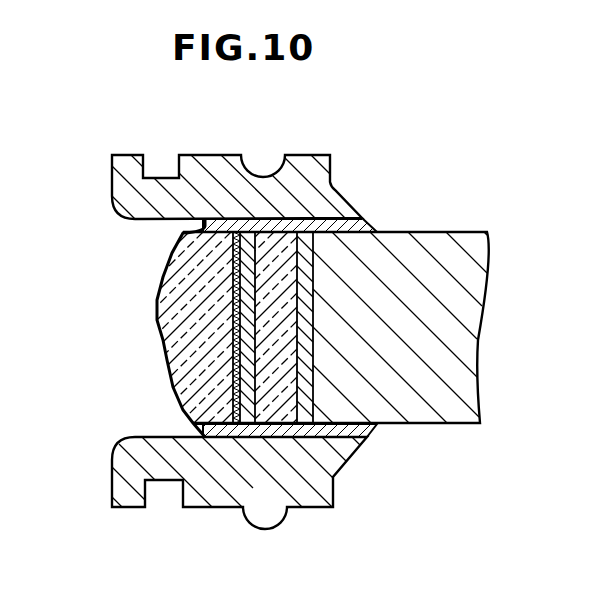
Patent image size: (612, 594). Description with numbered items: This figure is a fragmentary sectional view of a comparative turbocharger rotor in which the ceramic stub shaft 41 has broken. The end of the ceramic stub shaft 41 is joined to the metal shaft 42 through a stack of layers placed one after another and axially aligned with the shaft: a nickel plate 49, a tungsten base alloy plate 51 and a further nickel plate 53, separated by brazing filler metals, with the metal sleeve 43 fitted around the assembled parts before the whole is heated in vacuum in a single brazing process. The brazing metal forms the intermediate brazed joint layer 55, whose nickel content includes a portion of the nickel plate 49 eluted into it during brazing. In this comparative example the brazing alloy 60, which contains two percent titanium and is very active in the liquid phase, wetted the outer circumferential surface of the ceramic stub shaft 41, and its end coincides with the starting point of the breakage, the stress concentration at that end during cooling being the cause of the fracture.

The ceramic stub shaft 41 is at (163, 358).
The metal shaft 42 is at (450, 232).
The metal sleeve 43 is at (311, 500).
The nickel plate 49 is at (252, 221).
The tungsten base alloy plate 51 is at (298, 223).
The nickel plate 53 is at (355, 219).
The intermediate brazed joint layer 55 is at (235, 412).
The brazing alloy 60 is at (236, 425).